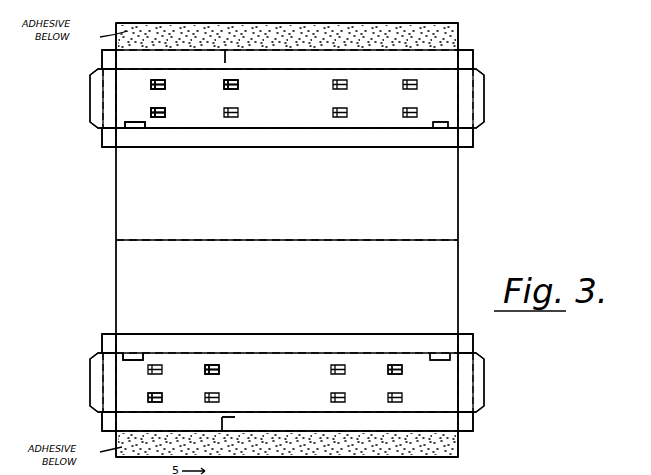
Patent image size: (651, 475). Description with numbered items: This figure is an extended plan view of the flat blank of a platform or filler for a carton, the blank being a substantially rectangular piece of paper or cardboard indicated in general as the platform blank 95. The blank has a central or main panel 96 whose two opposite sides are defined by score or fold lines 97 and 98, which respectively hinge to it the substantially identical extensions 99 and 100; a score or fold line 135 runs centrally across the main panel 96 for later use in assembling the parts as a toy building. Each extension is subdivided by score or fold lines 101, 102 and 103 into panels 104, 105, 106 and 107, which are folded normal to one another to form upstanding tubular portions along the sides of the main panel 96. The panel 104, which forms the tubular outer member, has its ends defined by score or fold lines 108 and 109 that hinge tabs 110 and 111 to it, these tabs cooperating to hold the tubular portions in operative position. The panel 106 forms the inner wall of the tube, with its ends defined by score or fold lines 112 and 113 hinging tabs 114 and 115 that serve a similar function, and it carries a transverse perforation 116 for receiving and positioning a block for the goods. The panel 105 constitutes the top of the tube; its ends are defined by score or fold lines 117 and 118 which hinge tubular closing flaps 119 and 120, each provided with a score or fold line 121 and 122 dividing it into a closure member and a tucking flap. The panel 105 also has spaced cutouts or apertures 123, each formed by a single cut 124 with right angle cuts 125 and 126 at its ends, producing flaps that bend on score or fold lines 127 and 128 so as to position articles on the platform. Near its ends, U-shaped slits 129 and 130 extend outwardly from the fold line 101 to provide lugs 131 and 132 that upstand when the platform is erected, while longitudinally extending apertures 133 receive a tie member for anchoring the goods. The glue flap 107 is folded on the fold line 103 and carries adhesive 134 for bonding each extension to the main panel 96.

The platform blank 95 is at (534, 155).
The central or main panel 96 is at (306, 221).
The score or fold line 97 is at (300, 335).
The score or fold line 98 is at (320, 148).
The extension 99 is at (489, 456).
The extension 100 is at (530, 75).
The score or fold line 101 is at (276, 129).
The score or fold line 102 is at (322, 74).
The score or fold line 103 is at (367, 50).
The panel 104 is at (262, 128).
The panel 105 is at (316, 126).
The panel 106 is at (310, 76).
The glue flap 107 is at (458, 30).
The score or fold line 108 is at (116, 135).
The score or fold line 109 is at (458, 137).
The tab 110 is at (110, 147).
The tab 111 is at (466, 146).
The score or fold line 112 is at (119, 60).
The score or fold line 113 is at (458, 61).
The tab 114 is at (102, 60).
The tab 115 is at (473, 57).
The transverse perforation 116 is at (228, 56).
The score or fold line 117 is at (119, 96).
The score or fold line 118 is at (458, 108).
The tubular closing flap 119 is at (92, 100).
The tubular closing flap 120 is at (486, 92).
The score or fold line 121 is at (92, 114).
The score or fold line 122 is at (486, 113).
The cutouts or apertures 123 is at (162, 92).
The single cut 124 is at (160, 80).
The right angle cut 125 is at (144, 246).
The right angle cut 126 is at (168, 113).
The score or fold line 127 is at (238, 82).
The score or fold line 128 is at (234, 90).
The U-shaped slit 129 is at (142, 128).
The U-shaped slit 130 is at (430, 362).
The lug 131 is at (105, 133).
The lug 132 is at (437, 128).
The longitudinally extending apertures 133 is at (210, 80).
The adhesive 134 is at (362, 32).
The score or fold line 135 is at (392, 232).